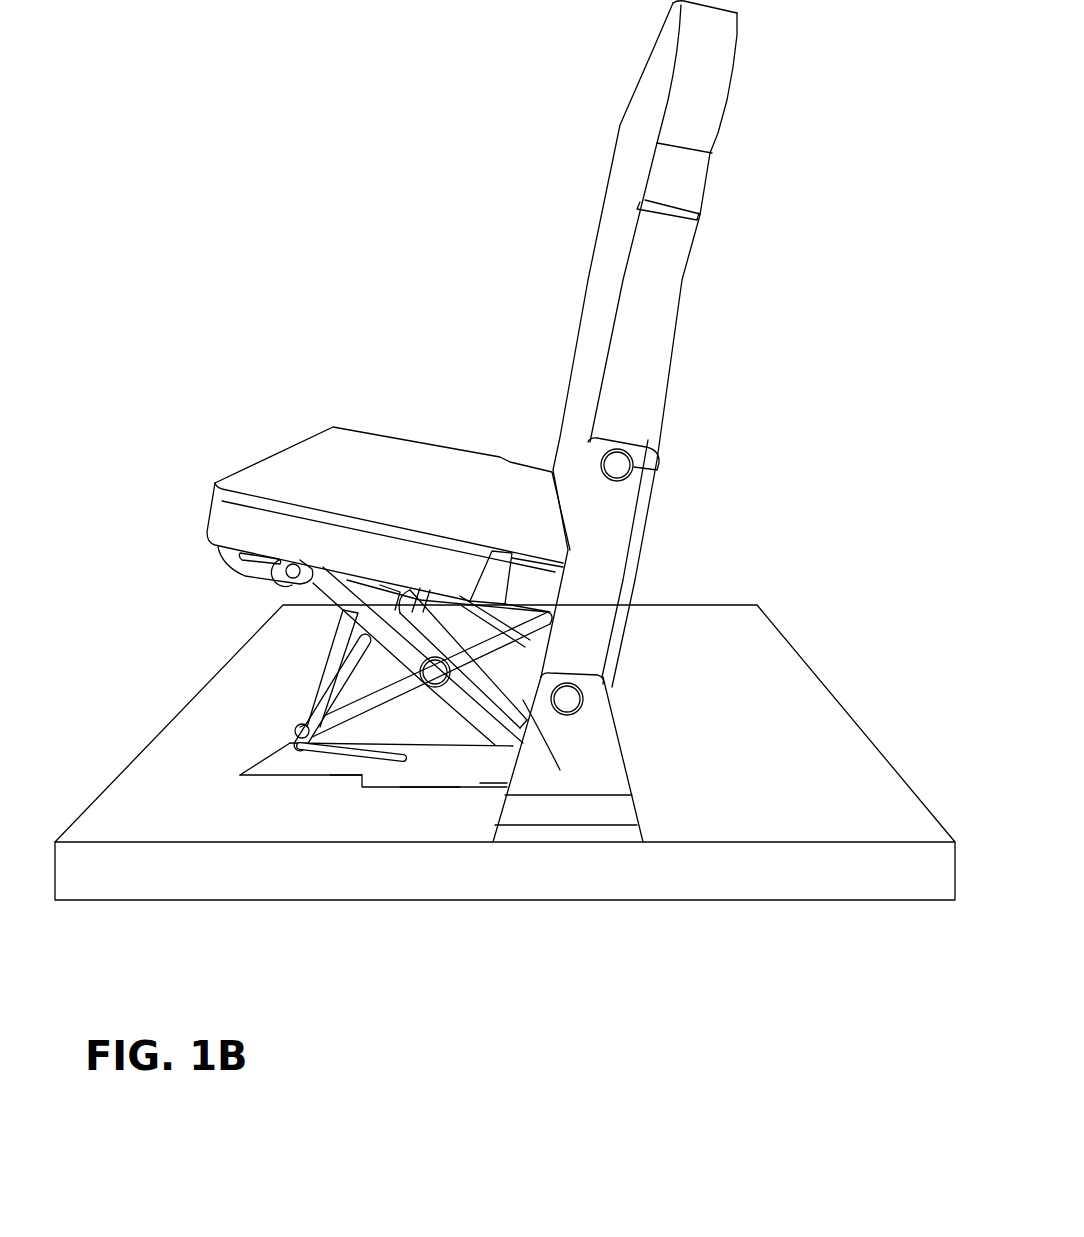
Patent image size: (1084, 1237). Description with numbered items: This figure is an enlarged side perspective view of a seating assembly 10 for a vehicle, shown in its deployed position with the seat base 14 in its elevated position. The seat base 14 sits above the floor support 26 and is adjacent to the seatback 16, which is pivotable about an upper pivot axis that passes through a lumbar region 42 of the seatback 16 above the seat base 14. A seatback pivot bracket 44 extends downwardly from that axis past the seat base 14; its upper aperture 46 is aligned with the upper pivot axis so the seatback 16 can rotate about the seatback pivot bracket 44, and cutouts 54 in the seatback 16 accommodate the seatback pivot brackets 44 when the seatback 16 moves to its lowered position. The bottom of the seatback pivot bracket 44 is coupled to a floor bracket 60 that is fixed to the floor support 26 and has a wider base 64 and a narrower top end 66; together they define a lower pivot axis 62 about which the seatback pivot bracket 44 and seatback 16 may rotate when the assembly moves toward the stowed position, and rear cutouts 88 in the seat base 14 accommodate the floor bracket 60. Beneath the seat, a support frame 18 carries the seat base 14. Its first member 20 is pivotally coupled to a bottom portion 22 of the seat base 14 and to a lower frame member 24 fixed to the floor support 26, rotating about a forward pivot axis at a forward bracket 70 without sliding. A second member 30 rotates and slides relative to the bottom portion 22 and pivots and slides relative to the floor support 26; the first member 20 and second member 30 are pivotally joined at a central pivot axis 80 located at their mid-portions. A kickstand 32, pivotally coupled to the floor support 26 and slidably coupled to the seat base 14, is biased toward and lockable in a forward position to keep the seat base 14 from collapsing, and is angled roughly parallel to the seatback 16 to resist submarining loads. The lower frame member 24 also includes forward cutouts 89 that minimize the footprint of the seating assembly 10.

The seating assembly 10 is at (441, 373).
The seat base 14 is at (325, 466).
The seatback 16 is at (668, 186).
The support frame 18 is at (313, 660).
The first member 20 is at (312, 762).
The bottom portion 22 is at (442, 682).
The lower frame member 24 is at (430, 765).
The floor support 26 is at (228, 820).
The second member 30 is at (300, 630).
The kickstand 32 is at (300, 707).
The lumbar region 42 is at (583, 385).
The seatback pivot bracket 44 is at (622, 468).
The upper aperture 46 is at (640, 460).
The cutouts 54 is at (637, 328).
The floor bracket 60 is at (592, 750).
The lower pivot axis 62 is at (573, 700).
The wider base 64 is at (602, 810).
The narrower top end 66 is at (592, 723).
The forward bracket 70 is at (300, 645).
The central pivot axis 80 is at (447, 592).
The rear cutouts 88 is at (535, 587).
The forward cutouts 89 is at (350, 784).